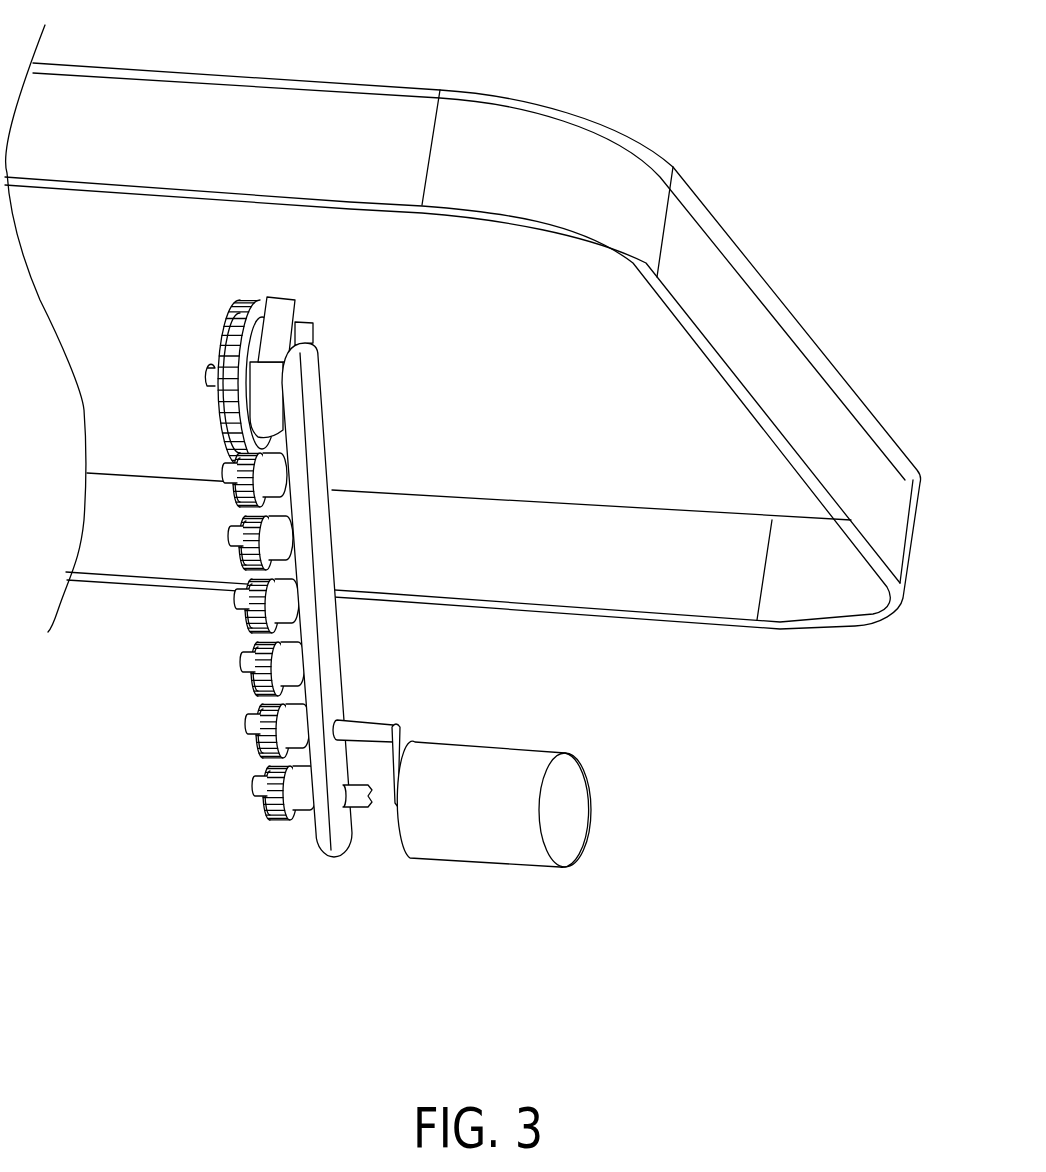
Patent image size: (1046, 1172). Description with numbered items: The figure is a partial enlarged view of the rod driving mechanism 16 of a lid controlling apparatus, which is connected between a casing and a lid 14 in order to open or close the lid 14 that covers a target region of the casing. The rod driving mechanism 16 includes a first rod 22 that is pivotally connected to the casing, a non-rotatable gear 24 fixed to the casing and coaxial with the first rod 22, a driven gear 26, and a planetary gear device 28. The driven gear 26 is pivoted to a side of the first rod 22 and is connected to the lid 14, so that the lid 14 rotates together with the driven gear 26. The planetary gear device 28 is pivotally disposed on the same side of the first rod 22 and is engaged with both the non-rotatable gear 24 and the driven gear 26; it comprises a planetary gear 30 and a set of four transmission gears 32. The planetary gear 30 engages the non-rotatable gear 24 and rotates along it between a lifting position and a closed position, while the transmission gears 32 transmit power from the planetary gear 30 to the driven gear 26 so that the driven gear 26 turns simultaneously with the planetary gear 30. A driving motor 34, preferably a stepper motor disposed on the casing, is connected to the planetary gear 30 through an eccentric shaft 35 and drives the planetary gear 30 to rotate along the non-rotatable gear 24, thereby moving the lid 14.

The lid 14 is at (212, 112).
The rod driving mechanism 16 is at (211, 664).
The first rod 22 is at (328, 660).
The non-rotatable gear 24 is at (278, 827).
The driven gear 26 is at (220, 426).
The planetary gear device 28 is at (193, 715).
The planetary gear 30 is at (264, 751).
The transmission gear 32 is at (236, 504).
The driving motor 34 is at (510, 758).
The eccentric shaft 35 is at (363, 732).